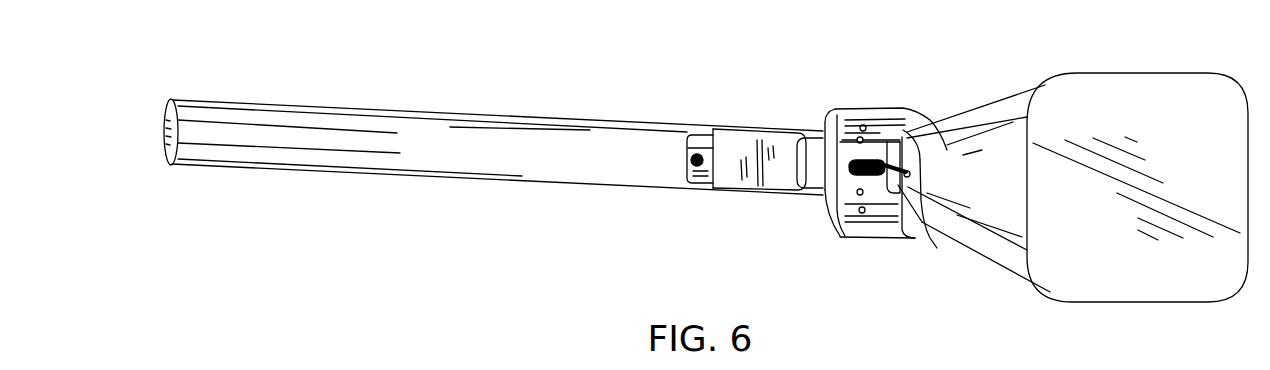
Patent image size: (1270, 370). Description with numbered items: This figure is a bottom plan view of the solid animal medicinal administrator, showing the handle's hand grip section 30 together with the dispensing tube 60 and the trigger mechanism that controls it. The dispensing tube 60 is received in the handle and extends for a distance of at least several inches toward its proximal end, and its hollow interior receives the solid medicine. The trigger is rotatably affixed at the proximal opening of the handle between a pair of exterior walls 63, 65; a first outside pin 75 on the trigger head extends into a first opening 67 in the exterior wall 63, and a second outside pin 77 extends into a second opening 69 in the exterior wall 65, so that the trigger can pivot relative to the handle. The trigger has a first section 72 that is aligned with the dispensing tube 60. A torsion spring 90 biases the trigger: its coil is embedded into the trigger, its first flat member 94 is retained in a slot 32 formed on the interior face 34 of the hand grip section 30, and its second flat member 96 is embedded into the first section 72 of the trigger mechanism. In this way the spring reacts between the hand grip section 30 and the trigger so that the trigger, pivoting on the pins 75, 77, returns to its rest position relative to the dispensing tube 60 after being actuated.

The hand grip section 30 is at (1190, 73).
The slot 32 is at (928, 230).
The interior face 34 is at (1005, 150).
The dispensing tube 60 is at (455, 172).
The exterior wall 63 is at (828, 124).
The exterior wall 65 is at (887, 240).
The first opening 67 is at (864, 124).
The second opening 69 is at (860, 213).
The first section 72 is at (737, 145).
The first outside pin 75 is at (880, 145).
The second outside pin 77 is at (858, 194).
The torsion spring 90 is at (878, 160).
The first flat member 94 is at (910, 172).
The second flat member 96 is at (696, 152).